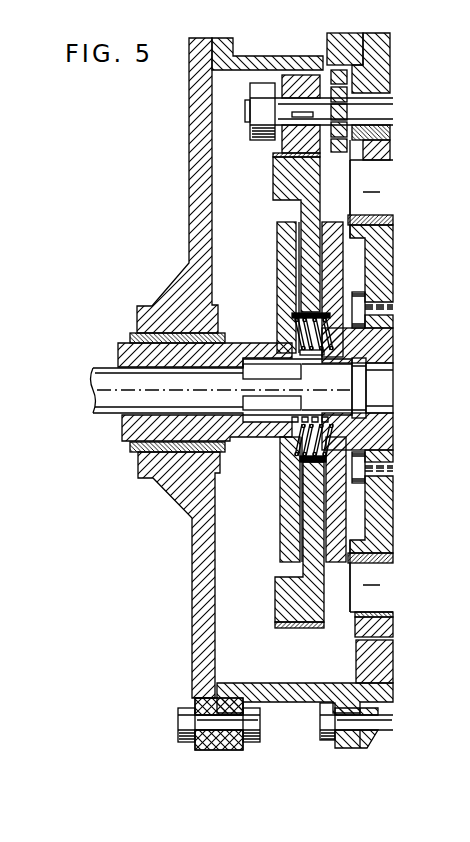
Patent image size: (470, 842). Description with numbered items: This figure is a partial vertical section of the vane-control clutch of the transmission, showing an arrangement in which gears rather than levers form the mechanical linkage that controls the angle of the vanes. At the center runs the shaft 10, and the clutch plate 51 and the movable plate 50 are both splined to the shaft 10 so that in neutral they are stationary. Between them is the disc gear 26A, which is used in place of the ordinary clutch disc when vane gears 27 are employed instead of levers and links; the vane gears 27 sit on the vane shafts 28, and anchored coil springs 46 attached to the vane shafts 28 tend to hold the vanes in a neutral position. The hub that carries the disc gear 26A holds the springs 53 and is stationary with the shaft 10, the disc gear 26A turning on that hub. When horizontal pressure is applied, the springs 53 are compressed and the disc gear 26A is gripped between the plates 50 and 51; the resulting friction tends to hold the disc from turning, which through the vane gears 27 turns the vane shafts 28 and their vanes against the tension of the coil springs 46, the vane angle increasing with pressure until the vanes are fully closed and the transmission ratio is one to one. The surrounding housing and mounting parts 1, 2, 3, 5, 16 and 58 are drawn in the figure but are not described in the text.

The housing end plate 1 is at (300, 702).
The bolt 2 is at (388, 735).
The housing wall 3 is at (189, 93).
The flywheel housing 5 is at (386, 678).
The shaft 10 is at (242, 388).
The recess 16 is at (371, 386).
The disc gear 26A is at (280, 177).
The vane gear 27 is at (283, 82).
The vane shaft 28 is at (334, 111).
The anchored coil spring 46 is at (321, 58).
The movable plate 50 is at (283, 278).
The clutch plate 51 is at (333, 285).
The spring 53 is at (289, 333).
The spring seat 58 is at (305, 464).